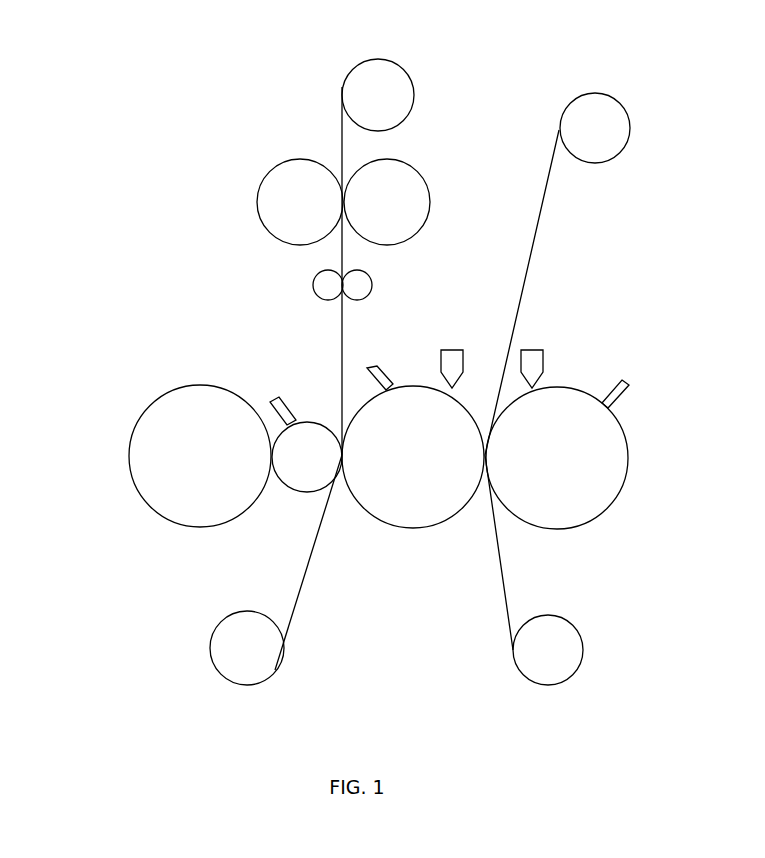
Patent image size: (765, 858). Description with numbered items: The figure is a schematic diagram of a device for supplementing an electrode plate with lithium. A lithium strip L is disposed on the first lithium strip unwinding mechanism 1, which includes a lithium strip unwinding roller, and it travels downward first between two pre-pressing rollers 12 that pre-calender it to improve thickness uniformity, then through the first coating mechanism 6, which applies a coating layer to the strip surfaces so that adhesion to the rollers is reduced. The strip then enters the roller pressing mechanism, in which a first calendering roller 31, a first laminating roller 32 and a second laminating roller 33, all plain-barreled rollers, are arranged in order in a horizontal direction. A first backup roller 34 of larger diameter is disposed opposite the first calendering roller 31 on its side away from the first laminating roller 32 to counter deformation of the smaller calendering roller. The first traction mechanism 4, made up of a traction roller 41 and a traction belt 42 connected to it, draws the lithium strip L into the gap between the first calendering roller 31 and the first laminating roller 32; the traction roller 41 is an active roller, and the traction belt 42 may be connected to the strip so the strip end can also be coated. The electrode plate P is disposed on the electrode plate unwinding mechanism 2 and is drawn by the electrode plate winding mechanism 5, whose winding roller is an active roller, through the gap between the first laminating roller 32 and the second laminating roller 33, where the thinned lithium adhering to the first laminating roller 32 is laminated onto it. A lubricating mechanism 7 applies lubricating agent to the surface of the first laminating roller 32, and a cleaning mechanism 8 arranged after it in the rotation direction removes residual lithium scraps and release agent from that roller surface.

The first lithium strip unwinding mechanism 1 is at (402, 85).
The lithium strip L is at (342, 117).
The pre-pressing rollers 12 is at (272, 200).
The first coating mechanism 6 is at (325, 287).
The first backup roller 34 is at (152, 440).
The first calendering roller 31 is at (303, 475).
The first laminating roller 32 is at (423, 510).
The second laminating roller 33 is at (548, 505).
The cleaning mechanism 8 is at (272, 400).
The lubricating mechanism 7 is at (455, 347).
The electrode plate winding mechanism 5 is at (603, 113).
The electrode plate P is at (497, 567).
The electrode plate unwinding mechanism 2 is at (562, 668).
The traction roller 41 is at (257, 660).
The traction belt 42 is at (312, 563).
The first traction mechanism 4 is at (172, 625).